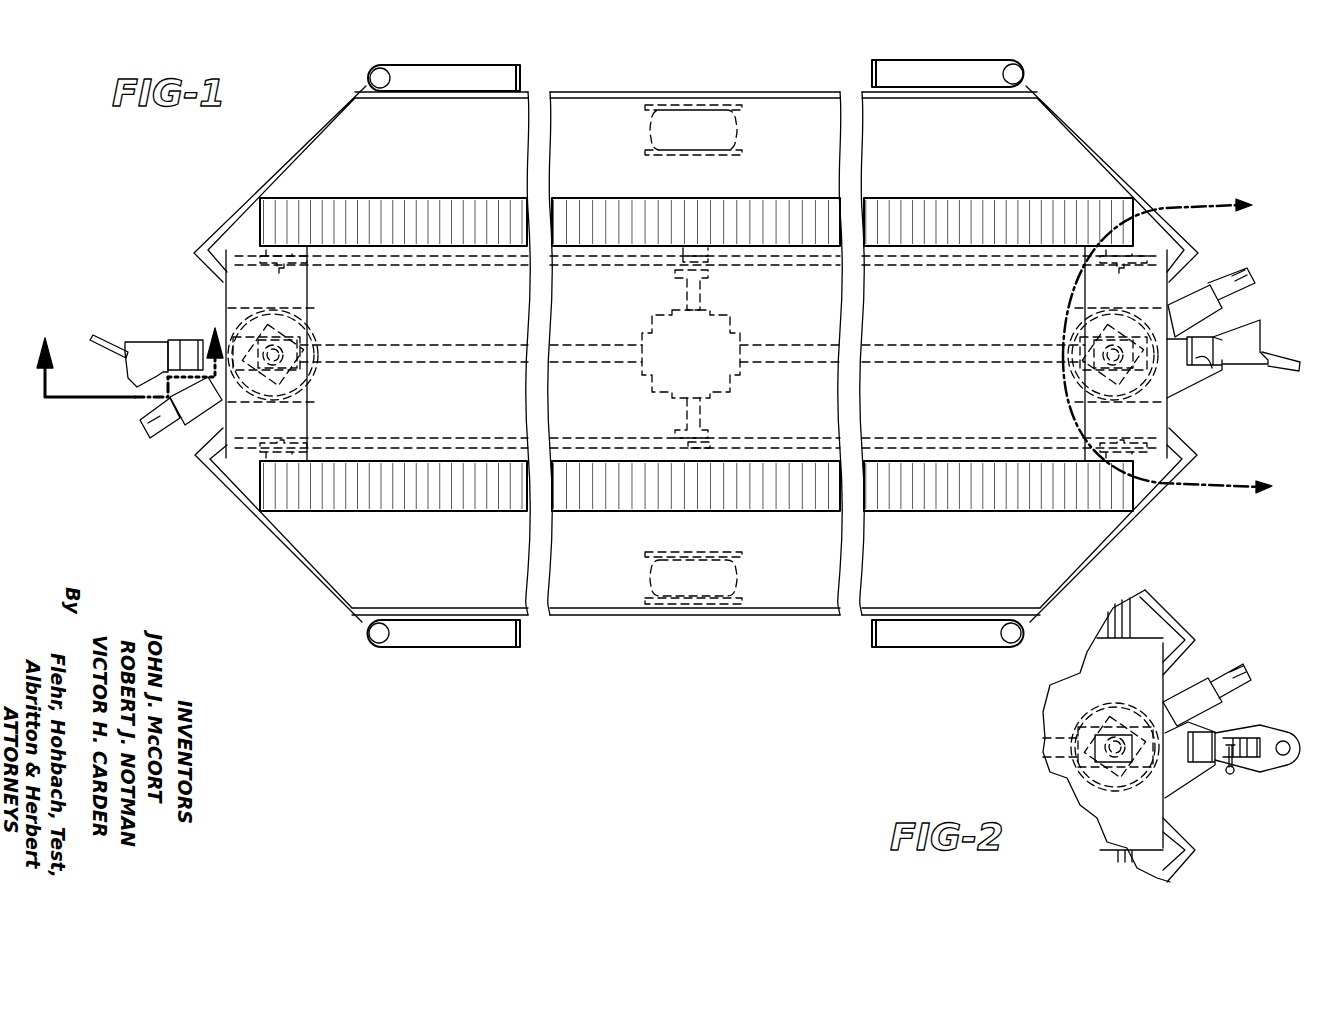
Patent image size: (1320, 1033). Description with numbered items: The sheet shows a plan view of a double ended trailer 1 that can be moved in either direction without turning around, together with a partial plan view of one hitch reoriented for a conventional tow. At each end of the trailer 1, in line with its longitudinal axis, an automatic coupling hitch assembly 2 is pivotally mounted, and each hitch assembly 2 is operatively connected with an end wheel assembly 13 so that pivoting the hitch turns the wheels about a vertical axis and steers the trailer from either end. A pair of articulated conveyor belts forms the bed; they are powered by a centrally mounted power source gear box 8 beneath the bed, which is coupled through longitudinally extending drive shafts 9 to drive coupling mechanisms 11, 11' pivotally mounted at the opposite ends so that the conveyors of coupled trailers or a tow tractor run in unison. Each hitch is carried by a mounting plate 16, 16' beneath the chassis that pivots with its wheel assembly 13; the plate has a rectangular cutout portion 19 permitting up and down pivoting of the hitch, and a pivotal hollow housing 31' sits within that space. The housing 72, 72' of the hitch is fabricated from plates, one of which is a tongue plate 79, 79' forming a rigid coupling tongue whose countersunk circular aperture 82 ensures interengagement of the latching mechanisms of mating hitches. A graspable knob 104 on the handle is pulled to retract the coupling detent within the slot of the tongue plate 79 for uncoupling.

In FIG. 1, the double ended trailer 1 is at (298, 582).
In FIG. 2, the automatic coupling hitch assembly 2 is at (1287, 718).
In FIG. 1, the power source gear box 8 is at (723, 325).
In FIG. 2, the longitudinally extending drive shaft 9 is at (1065, 740).
In FIG. 1, the drive coupling mechanism 11 is at (181, 417).
In FIG. 2, the drive coupling mechanism 11 is at (1207, 687).
In FIG. 1, the drive coupling mechanism 11' is at (1211, 292).
In FIG. 2, the wheel and pneumatic tire assembly 13 is at (1075, 770).
In FIG. 1, the mounting plate 16 is at (180, 328).
In FIG. 2, the mounting plate 16 is at (1190, 776).
In FIG. 1, the mounting plate 16' is at (1197, 382).
In FIG. 1, the cutout portion 19 is at (1216, 368).
In FIG. 1, the pivotal hollow housing 31' is at (1224, 332).
In FIG. 1, the housing 72 is at (127, 365).
In FIG. 1, the housing 72' is at (1261, 330).
In FIG. 1, the tongue plate 79 is at (105, 328).
In FIG. 2, the tongue plate 79 is at (1257, 771).
In FIG. 1, the tongue plate 79' is at (1289, 346).
In FIG. 2, the circular aperture 82 is at (1284, 756).
In FIG. 2, the graspable knob 104 is at (1230, 775).